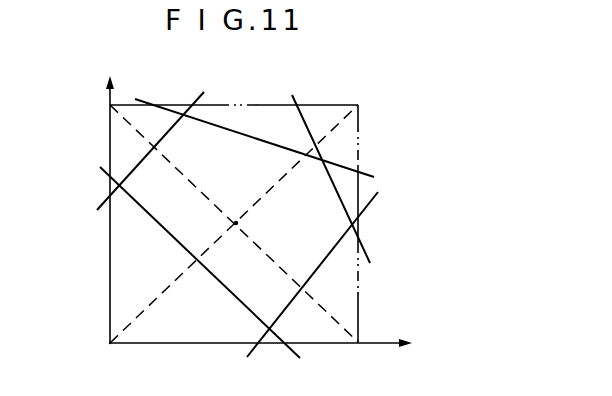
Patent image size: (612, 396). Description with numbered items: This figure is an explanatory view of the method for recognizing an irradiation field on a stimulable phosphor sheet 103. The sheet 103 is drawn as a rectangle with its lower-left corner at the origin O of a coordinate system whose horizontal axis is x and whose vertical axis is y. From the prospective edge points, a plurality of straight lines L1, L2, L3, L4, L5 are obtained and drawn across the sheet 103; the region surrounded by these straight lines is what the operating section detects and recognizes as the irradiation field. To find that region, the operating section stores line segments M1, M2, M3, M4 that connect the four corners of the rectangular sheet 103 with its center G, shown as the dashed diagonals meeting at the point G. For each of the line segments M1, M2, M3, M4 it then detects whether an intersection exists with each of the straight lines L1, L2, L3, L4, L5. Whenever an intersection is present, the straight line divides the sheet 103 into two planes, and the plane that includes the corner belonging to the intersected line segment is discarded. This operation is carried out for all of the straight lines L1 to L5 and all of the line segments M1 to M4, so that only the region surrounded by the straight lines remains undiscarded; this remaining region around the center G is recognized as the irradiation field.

The stimulable phosphor sheet 103 is at (258, 100).
The straight line L1 is at (227, 289).
The straight line L2 is at (283, 308).
The straight line L3 is at (337, 192).
The straight line L4 is at (256, 141).
The straight line L5 is at (139, 163).
The line segment M1 is at (282, 182).
The line segment M2 is at (206, 191).
The line segment M3 is at (212, 244).
The line segment M4 is at (289, 278).
The center G is at (247, 224).
The x axis x is at (268, 349).
The y axis y is at (107, 197).
The origin O is at (102, 356).